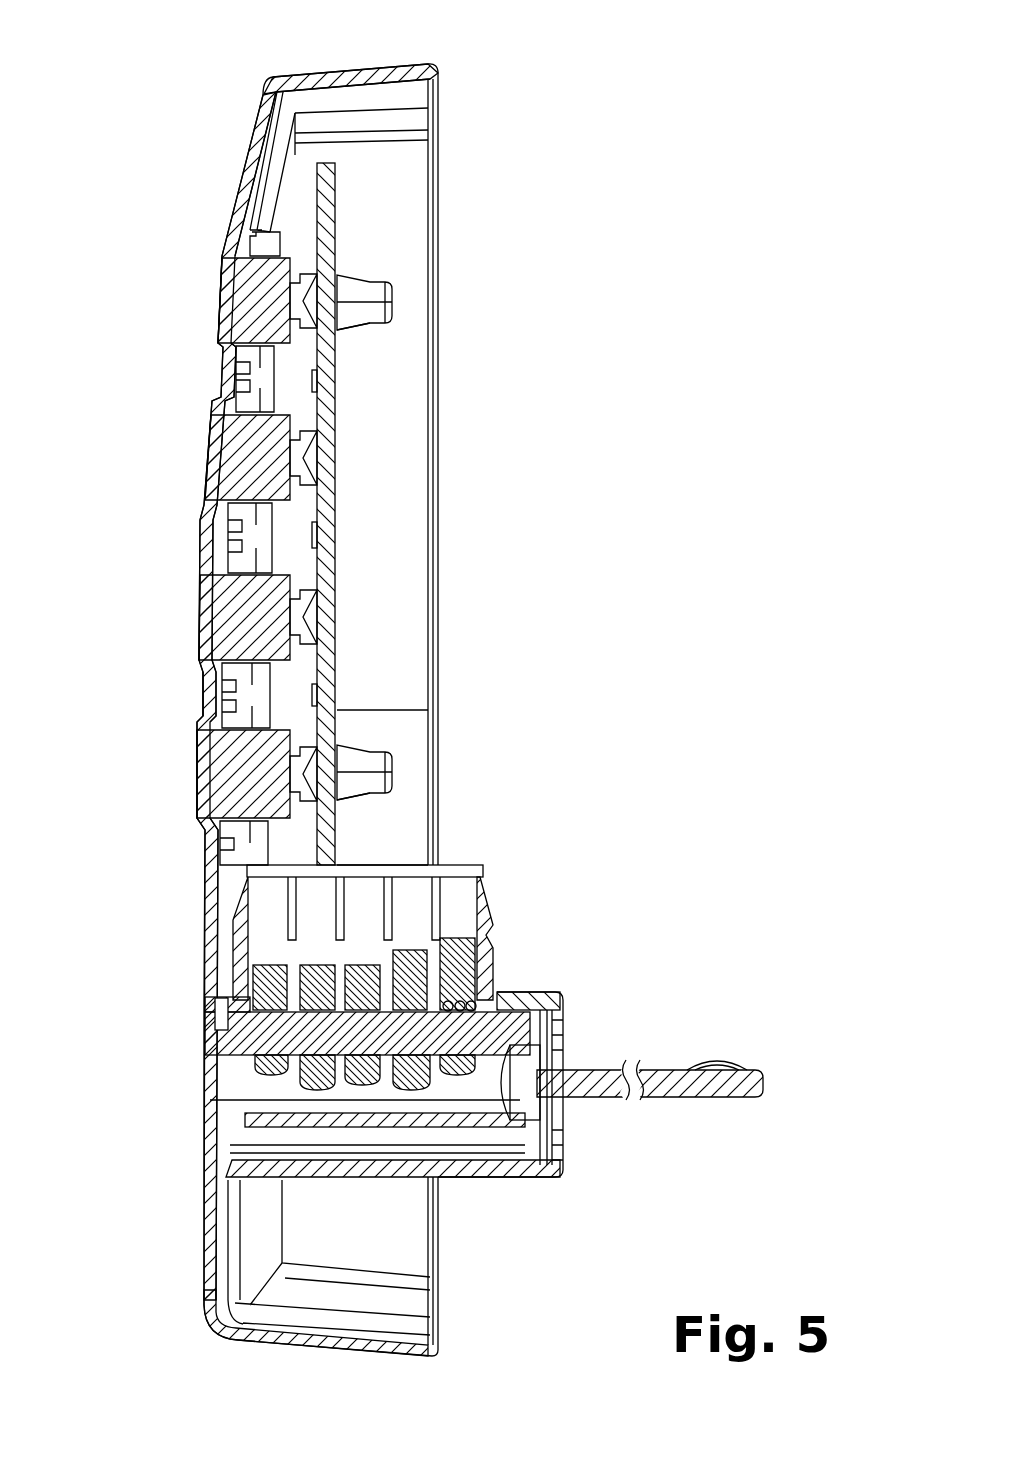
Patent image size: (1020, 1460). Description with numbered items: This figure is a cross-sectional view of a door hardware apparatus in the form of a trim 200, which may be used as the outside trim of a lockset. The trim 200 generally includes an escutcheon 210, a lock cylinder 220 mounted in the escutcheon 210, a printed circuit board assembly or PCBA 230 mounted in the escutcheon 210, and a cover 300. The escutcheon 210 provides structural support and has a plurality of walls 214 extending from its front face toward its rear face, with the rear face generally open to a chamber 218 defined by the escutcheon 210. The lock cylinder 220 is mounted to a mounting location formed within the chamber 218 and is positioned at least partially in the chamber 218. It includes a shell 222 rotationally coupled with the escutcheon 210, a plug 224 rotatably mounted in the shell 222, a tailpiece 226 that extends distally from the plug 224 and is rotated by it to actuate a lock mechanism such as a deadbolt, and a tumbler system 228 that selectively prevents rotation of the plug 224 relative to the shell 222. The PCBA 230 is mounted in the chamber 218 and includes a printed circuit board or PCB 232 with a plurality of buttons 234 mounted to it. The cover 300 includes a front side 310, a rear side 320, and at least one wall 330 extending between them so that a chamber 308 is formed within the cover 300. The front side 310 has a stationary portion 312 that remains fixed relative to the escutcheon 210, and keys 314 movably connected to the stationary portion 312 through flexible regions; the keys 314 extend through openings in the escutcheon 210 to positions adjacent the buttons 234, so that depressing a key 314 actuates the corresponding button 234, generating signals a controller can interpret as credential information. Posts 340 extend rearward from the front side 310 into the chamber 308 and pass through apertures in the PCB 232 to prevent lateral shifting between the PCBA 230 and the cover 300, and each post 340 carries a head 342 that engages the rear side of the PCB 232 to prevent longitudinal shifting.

The trim 200 is at (170, 70).
The escutcheon 210 is at (314, 96).
The walls 214 is at (312, 1192).
The chamber 218 is at (410, 385).
The lock cylinder 220 is at (570, 873).
The shell 222 is at (485, 967).
The plug 224 is at (210, 1062).
The tailpiece 226 is at (650, 1076).
The tumbler system 228 is at (500, 1027).
The printed circuit board assembly (PCBA) 230 is at (370, 214).
The printed circuit board (PCB) 232 is at (348, 466).
The buttons 234 is at (300, 298).
The cover 300 is at (262, 118).
The chamber 308 is at (388, 507).
The front side 310 is at (195, 212).
The stationary portion 312 is at (200, 698).
The keys 314 is at (218, 315).
The rear side 320 is at (480, 163).
The wall 330 is at (400, 68).
The posts 340 is at (349, 336).
The head 342 is at (355, 285).